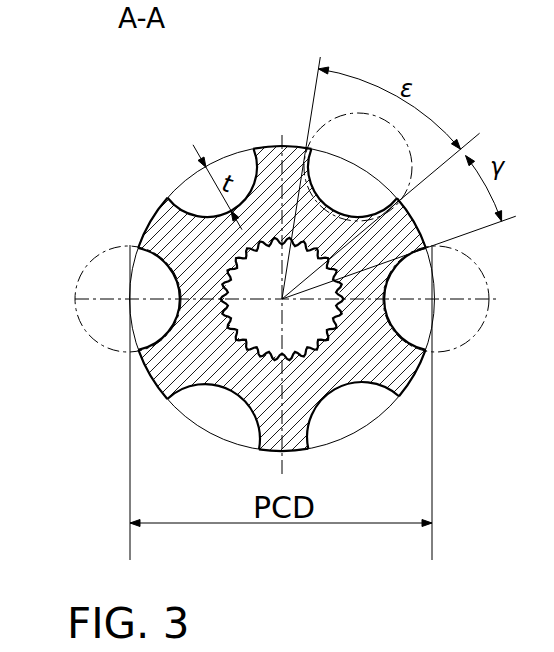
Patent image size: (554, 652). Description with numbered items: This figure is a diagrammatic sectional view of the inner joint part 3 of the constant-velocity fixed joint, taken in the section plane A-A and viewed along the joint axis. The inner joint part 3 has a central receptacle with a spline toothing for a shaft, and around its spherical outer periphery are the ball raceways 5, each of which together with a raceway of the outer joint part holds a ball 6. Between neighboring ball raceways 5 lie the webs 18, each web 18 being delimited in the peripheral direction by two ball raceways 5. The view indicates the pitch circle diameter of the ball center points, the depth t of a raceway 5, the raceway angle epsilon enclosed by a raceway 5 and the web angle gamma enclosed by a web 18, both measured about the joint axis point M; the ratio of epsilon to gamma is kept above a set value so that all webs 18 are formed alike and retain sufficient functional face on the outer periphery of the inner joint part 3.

The inner joint part 3 is at (263, 168).
The ball raceway 5 is at (172, 207).
The ball 6 is at (343, 140).
The web 18 is at (292, 165).